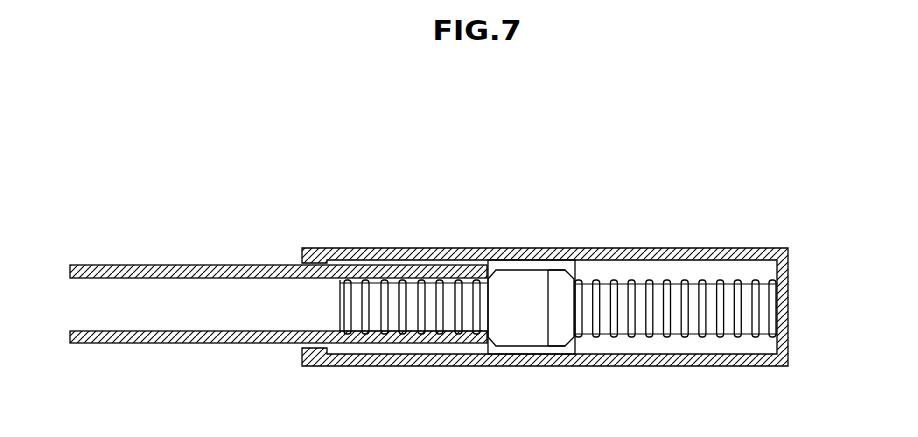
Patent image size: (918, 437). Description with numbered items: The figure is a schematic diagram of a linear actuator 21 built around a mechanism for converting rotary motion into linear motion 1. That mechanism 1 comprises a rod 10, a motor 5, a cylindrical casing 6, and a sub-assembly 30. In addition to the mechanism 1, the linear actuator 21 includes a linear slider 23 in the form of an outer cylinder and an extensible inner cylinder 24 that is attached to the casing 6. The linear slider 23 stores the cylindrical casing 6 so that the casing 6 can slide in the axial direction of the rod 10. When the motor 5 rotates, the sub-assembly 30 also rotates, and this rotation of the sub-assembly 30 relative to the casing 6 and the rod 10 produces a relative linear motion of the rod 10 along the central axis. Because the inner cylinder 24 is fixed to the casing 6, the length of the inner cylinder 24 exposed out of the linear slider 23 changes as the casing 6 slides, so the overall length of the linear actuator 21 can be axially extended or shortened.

The mechanism for converting rotary motion into linear motion 1 is at (423, 170).
The motor 5 is at (562, 272).
The casing 6 is at (502, 272).
The rod 10 is at (450, 278).
The linear actuator 21 is at (244, 172).
The linear slider 23 is at (350, 248).
The extensible inner cylinder 24 is at (201, 265).
The sub-assembly 30 is at (532, 275).